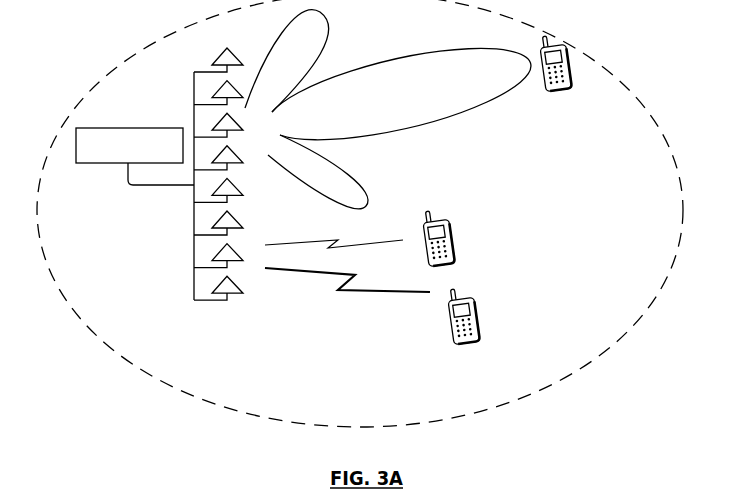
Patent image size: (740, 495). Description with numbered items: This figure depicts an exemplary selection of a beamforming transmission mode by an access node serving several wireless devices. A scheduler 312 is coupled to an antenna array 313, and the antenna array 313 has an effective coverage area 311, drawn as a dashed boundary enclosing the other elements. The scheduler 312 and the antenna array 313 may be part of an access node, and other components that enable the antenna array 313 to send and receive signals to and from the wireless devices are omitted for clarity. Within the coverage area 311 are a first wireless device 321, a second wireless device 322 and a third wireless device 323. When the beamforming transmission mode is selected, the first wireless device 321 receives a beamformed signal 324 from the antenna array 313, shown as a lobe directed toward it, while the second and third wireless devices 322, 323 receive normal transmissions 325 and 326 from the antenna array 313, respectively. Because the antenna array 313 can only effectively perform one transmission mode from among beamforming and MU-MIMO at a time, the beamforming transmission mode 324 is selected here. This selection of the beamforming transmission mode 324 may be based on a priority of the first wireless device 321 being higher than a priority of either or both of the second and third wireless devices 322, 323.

The coverage area 311 is at (137, 53).
The scheduler 312 is at (117, 164).
The antenna array 313 is at (193, 283).
The first wireless device 321 is at (561, 92).
The second wireless device 322 is at (455, 243).
The third wireless device 323 is at (478, 333).
The beamformed signal 324 is at (423, 52).
The normal transmission 325 is at (338, 240).
The normal transmission 326 is at (338, 290).